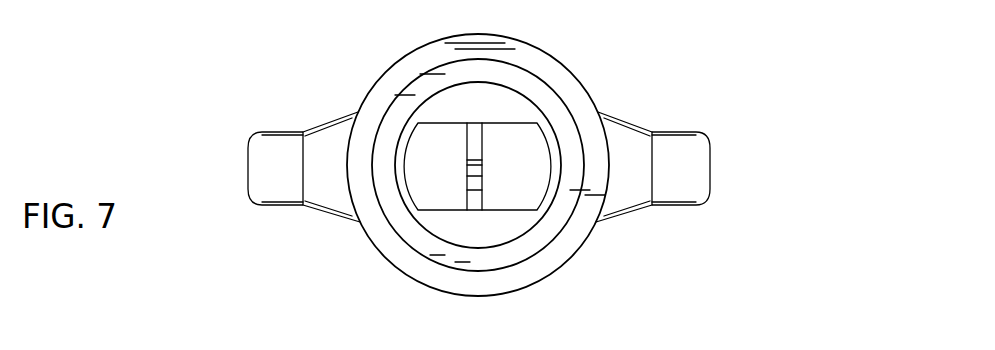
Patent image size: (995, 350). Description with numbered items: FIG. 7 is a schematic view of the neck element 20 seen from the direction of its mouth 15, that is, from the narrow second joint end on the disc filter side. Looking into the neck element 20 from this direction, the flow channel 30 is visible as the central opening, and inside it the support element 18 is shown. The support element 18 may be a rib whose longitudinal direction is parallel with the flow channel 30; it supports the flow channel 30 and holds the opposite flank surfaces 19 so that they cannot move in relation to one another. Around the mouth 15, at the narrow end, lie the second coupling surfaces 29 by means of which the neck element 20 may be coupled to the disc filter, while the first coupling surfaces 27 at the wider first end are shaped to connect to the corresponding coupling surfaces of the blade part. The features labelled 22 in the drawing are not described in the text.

The mouth 15 is at (429, 86).
The support element 18 is at (468, 174).
The flank surfaces 19 is at (492, 125).
The neck element 20 is at (762, 66).
The wing 22 is at (327, 145).
The first coupling surfaces 27 is at (287, 126).
The second coupling surfaces 29 is at (545, 100).
The flow channel 30 is at (507, 195).